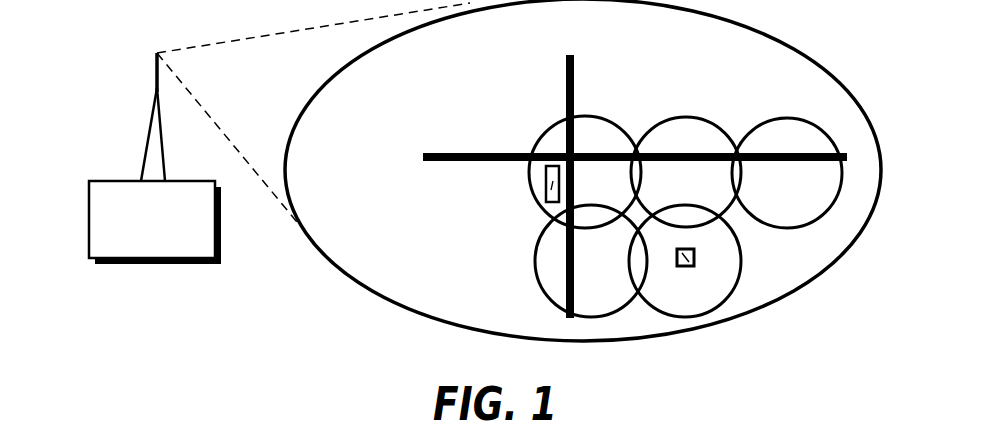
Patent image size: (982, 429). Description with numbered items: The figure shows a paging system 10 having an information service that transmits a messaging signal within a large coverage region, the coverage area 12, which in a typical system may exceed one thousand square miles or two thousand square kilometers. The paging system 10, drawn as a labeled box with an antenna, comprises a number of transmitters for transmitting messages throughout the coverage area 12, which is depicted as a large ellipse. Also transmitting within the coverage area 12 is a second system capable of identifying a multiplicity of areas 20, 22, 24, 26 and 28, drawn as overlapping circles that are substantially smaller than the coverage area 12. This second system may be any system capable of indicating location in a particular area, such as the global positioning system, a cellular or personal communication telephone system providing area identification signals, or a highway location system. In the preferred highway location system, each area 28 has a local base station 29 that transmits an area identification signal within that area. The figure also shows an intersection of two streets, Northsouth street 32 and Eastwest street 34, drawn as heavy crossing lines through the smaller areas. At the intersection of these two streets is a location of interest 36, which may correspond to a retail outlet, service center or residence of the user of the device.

The paging system 10 is at (105, 180).
The coverage area 12 is at (382, 280).
The area 20 is at (553, 140).
The area 22 is at (678, 128).
The area 24 is at (777, 128).
The area 26 is at (548, 255).
The area 28 is at (683, 300).
The local base station 29 is at (695, 265).
The Northsouth street 32 is at (570, 55).
The Eastwest street 34 is at (455, 150).
The location of interest 36 is at (549, 203).